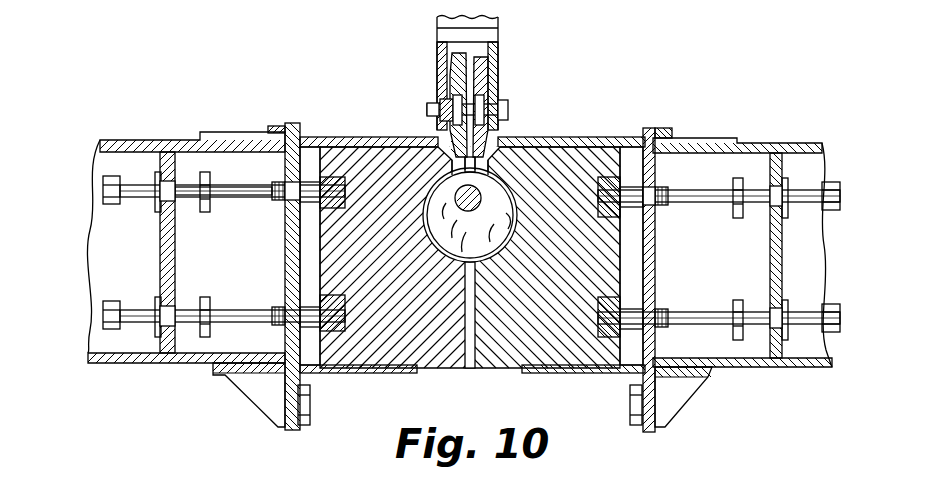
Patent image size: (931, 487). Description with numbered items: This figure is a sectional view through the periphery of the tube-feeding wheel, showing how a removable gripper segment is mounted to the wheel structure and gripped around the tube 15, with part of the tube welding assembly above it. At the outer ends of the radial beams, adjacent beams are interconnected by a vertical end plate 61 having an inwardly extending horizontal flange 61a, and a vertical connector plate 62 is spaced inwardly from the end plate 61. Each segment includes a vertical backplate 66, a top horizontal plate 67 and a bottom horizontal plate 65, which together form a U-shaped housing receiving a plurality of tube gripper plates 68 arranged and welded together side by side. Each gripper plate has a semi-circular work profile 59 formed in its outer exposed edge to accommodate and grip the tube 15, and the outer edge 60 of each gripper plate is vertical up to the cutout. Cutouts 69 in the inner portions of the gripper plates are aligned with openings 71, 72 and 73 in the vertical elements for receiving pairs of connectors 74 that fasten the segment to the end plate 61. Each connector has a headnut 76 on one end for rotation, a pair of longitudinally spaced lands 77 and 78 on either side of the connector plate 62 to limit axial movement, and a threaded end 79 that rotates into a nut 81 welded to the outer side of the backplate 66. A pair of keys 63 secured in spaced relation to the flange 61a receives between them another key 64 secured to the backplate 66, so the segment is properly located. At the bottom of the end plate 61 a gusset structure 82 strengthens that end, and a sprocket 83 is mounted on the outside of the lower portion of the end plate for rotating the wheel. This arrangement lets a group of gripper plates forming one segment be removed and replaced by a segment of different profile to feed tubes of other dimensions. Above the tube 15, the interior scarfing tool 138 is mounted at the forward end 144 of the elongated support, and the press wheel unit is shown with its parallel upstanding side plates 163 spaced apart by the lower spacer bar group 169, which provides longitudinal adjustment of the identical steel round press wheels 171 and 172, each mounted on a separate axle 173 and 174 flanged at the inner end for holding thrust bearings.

The tube 15 is at (470, 234).
The semi-circularly formed profile 59 is at (516, 216).
The outer edge 60 is at (468, 370).
The vertical end plate 61 is at (294, 243).
The horizontal flange 61a is at (230, 187).
The vertical connector plate 62 is at (158, 262).
The keys 63 is at (662, 130).
The key 64 is at (288, 126).
The bottom horizontal plate 65 is at (400, 373).
The vertical backplate 66 is at (300, 262).
The top horizontal plate 67 is at (394, 138).
The tube gripper plates 68 is at (430, 316).
The cutouts 69 is at (345, 200).
The opening 71 is at (166, 181).
The opening 72 is at (288, 182).
The opening 73 is at (288, 220).
The connectors 74 is at (228, 185).
The headnut 76 is at (106, 192).
The land 77 is at (156, 210).
The land 78 is at (205, 172).
The threaded end 79 is at (340, 182).
The nut 81 is at (306, 180).
The gusset structure 82 is at (258, 396).
The sprocket 83 is at (306, 428).
The interior scarfing tool 138 is at (487, 160).
The forward end 144 is at (482, 196).
The side plates 163 is at (440, 52).
The spacer bar group 169 is at (492, 30).
The press wheel 171 is at (456, 70).
The press wheel 172 is at (490, 82).
The axle 173 is at (444, 110).
The axle 174 is at (502, 108).